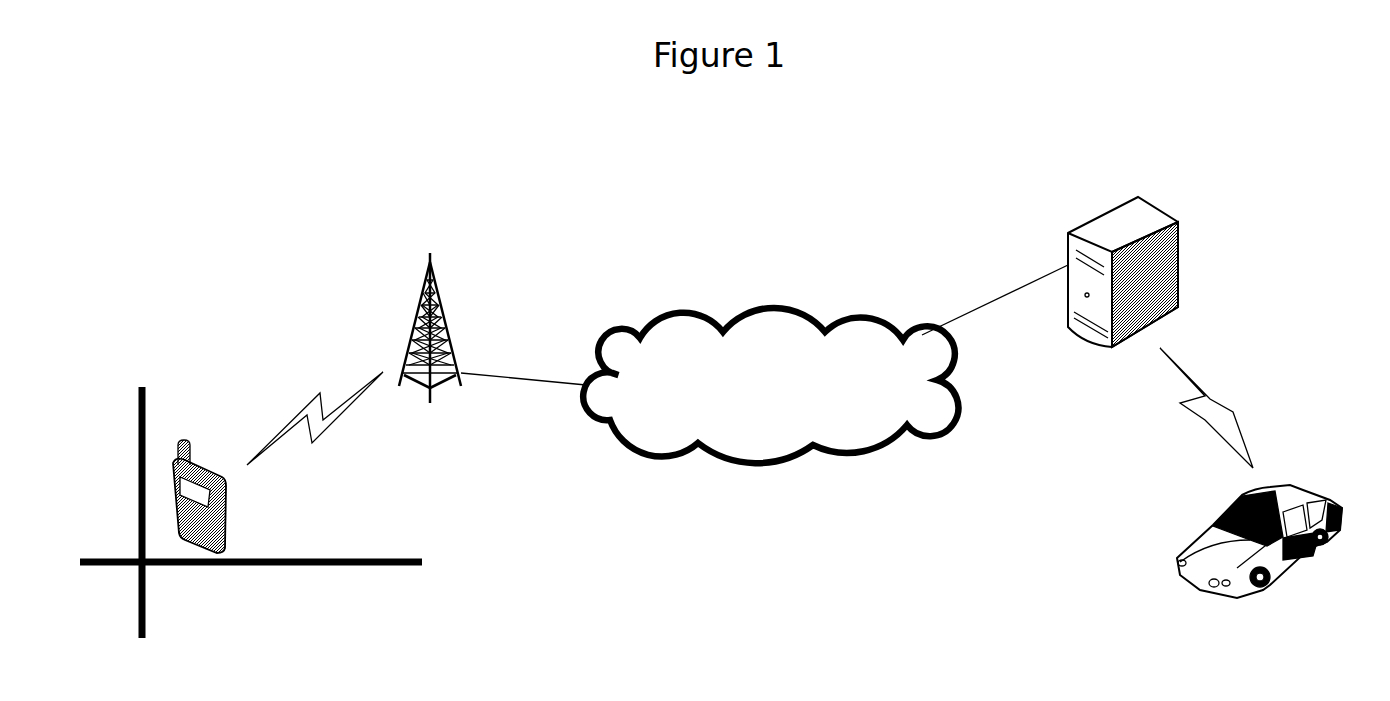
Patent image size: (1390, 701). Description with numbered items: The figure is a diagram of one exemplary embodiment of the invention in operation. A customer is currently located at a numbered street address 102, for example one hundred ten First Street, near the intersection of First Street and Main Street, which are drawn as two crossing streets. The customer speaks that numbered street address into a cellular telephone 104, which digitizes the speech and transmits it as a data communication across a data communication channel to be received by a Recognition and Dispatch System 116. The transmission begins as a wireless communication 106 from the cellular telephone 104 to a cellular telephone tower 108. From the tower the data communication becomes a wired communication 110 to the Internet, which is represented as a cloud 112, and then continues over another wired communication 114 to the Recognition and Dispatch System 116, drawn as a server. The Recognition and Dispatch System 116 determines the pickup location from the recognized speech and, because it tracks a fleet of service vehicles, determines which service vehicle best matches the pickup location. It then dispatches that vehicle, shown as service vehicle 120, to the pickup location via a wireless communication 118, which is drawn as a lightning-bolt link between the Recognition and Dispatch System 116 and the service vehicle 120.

The numbered street address 102 is at (196, 570).
The cellular telephone 104 is at (234, 497).
The wireless communication 106 is at (331, 432).
The cellular telephone tower 108 is at (441, 398).
The wired communication 110 is at (497, 374).
The cloud 112 is at (770, 385).
The wired communication 114 is at (975, 317).
The Recognition and Dispatch System 116 is at (1163, 206).
The wireless communication 118 is at (1207, 382).
The service vehicle 120 is at (1297, 479).